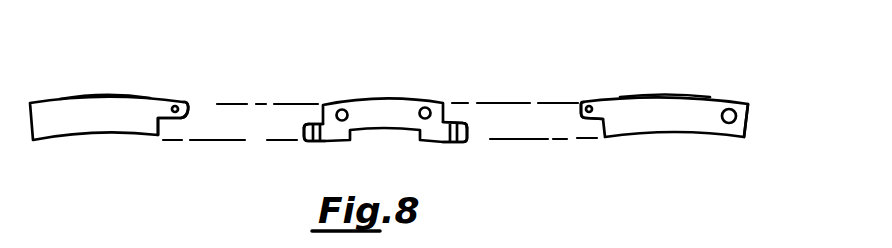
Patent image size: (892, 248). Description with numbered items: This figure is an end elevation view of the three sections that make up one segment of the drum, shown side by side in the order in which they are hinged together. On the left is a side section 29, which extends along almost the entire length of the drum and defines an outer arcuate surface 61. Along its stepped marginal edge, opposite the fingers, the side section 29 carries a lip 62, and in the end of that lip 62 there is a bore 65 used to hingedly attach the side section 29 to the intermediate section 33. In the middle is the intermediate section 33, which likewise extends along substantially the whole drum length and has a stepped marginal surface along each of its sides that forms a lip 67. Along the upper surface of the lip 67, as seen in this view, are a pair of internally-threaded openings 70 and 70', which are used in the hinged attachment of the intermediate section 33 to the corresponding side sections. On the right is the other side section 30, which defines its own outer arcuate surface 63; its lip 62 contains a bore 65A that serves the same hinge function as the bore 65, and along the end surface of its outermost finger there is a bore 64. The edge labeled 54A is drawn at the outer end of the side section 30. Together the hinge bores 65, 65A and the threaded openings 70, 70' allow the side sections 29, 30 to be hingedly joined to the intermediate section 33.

The side section 29 is at (92, 97).
The outer arcuate surface 61 is at (146, 98).
The lip 62 is at (193, 107).
The bore 65 is at (175, 112).
The intermediate section 33 is at (377, 105).
The internally-threaded opening 70 is at (309, 97).
The internally-threaded opening 70' is at (467, 98).
The lip 67 is at (304, 129).
The second link segment 30 is at (642, 97).
The outer arcuate surface 63 is at (693, 98).
The bore 65A is at (590, 106).
The bore 64 is at (722, 118).
The end edge 54A is at (750, 118).